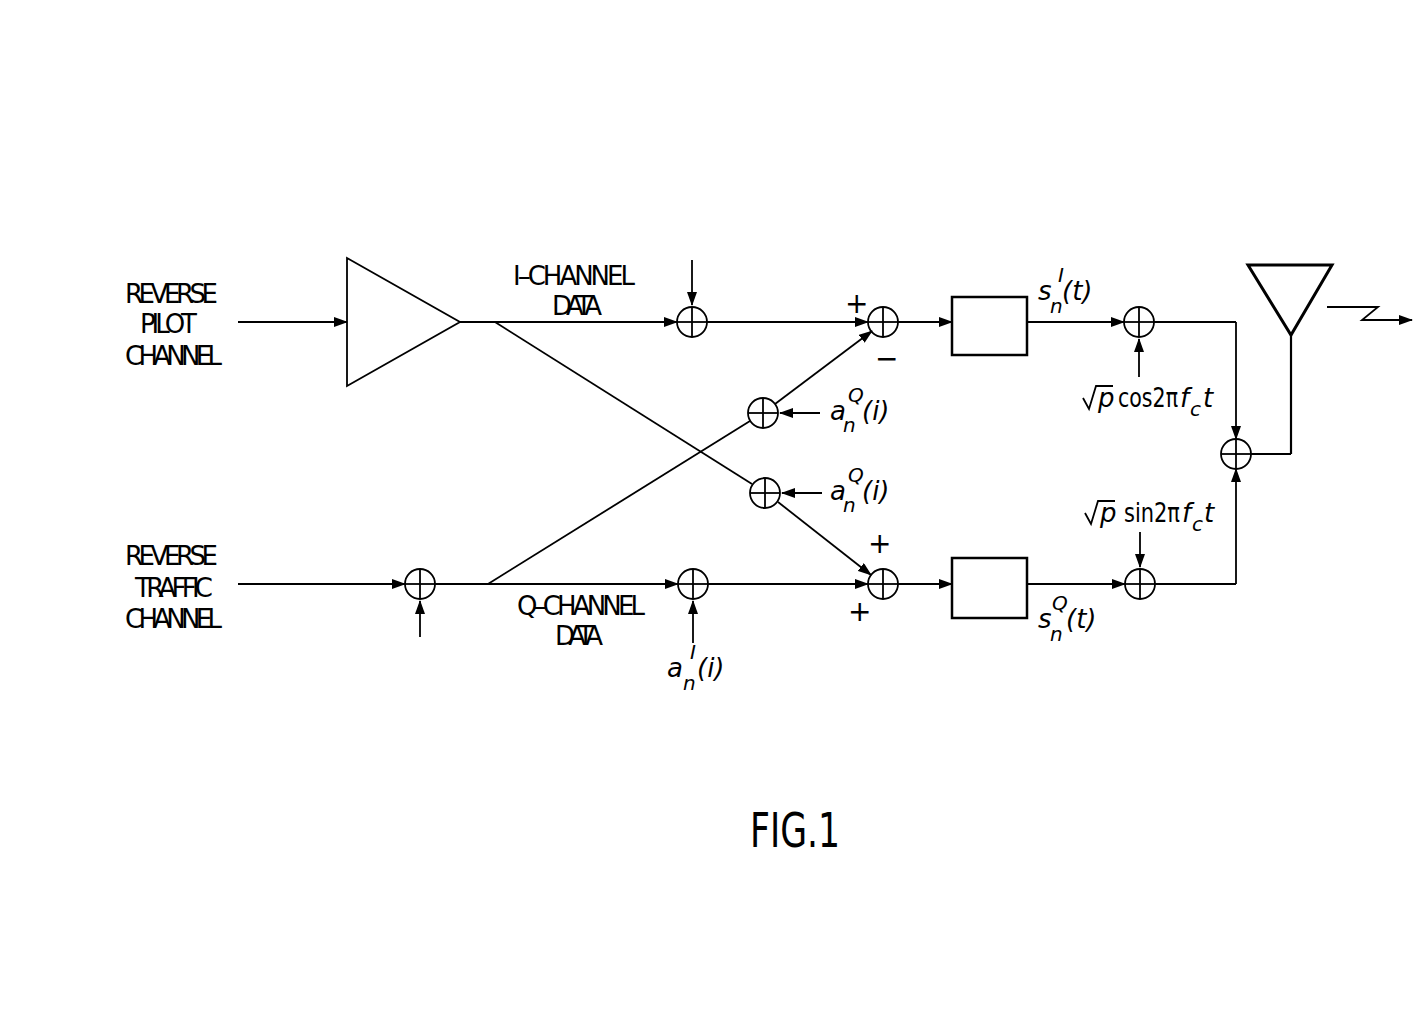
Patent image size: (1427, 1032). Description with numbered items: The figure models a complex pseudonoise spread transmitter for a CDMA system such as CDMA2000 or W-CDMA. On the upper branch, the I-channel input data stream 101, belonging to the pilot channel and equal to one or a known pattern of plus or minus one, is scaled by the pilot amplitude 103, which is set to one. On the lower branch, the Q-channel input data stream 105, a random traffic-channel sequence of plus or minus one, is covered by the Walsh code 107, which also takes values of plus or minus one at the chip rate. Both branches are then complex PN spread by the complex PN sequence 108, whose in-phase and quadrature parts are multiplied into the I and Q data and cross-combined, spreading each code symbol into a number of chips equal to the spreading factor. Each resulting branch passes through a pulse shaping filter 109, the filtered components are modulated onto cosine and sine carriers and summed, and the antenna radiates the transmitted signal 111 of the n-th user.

The I-channel input data stream 101 is at (249, 268).
The pilot amplitude 103 is at (388, 282).
The Q-channel input data stream 105 is at (280, 527).
The Walsh code 107 is at (401, 568).
The complex PN sequence 108 is at (726, 210).
The pulse shaping filter 109 is at (990, 297).
The transmitted signal 111 is at (1358, 292).